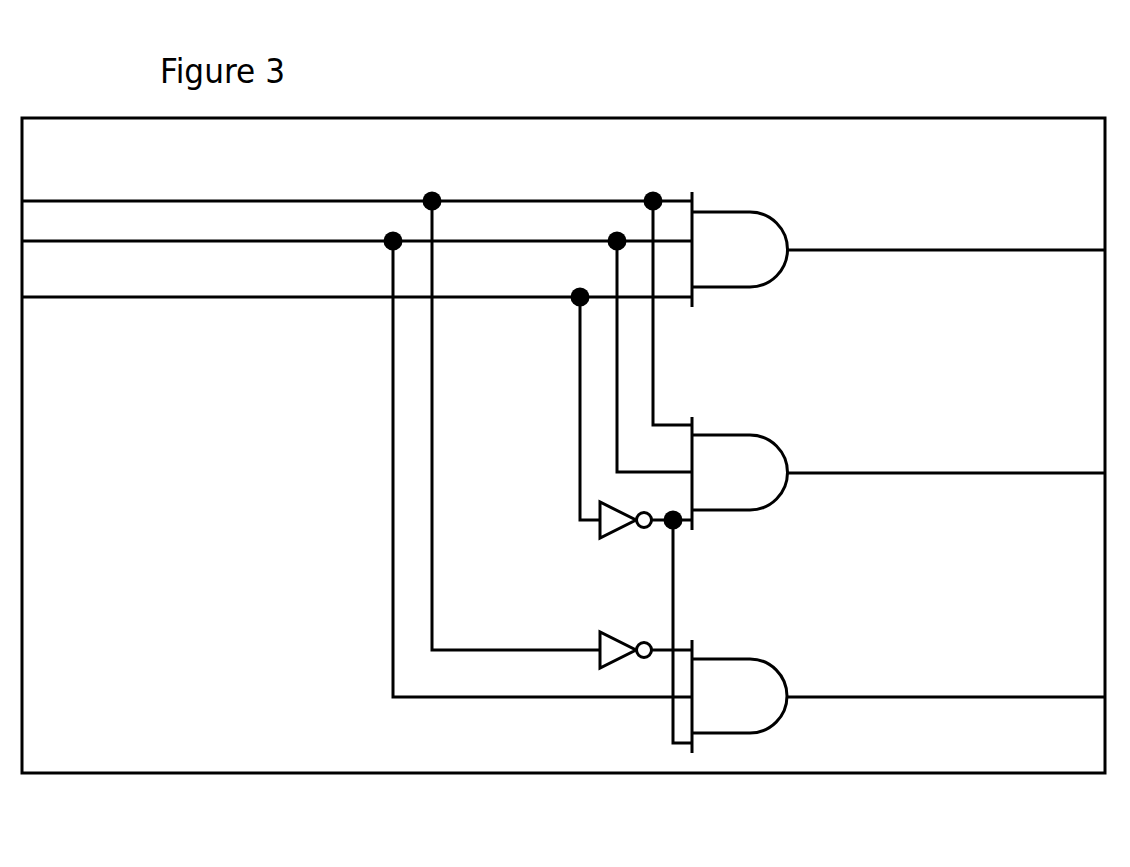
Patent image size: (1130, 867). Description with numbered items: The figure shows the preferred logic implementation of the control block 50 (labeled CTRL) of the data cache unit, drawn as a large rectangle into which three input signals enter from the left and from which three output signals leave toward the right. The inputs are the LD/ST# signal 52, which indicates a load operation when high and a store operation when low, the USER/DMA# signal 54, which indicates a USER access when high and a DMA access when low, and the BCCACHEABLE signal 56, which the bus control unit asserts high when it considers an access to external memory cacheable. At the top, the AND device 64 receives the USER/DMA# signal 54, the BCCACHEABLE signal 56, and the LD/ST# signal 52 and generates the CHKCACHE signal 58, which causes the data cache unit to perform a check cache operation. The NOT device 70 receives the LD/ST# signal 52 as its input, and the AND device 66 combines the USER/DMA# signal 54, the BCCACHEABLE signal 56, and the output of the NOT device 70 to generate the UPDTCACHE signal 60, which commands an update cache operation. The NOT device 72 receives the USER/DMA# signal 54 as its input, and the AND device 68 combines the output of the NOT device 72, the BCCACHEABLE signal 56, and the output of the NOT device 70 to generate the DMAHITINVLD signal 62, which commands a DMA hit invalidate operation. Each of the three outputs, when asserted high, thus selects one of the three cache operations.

The control block 50 is at (152, 765).
The LD/ST# signal 52 is at (37, 297).
The USER/DMA# signal 54 is at (38, 200).
The BCCACHEABLE signal 56 is at (28, 240).
The CHKCACHE signal 58 is at (998, 250).
The UPDTCACHE signal 60 is at (998, 473).
The DMAHITINVLD signal 62 is at (998, 697).
The AND device 64 is at (765, 230).
The AND device 66 is at (765, 455).
The AND device 68 is at (765, 680).
The NOT device 70 is at (608, 528).
The NOT device 72 is at (608, 642).